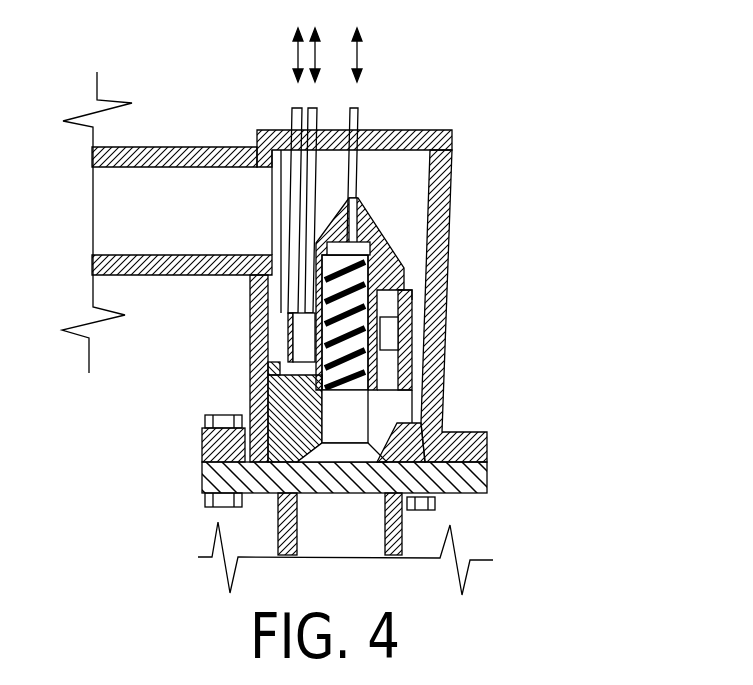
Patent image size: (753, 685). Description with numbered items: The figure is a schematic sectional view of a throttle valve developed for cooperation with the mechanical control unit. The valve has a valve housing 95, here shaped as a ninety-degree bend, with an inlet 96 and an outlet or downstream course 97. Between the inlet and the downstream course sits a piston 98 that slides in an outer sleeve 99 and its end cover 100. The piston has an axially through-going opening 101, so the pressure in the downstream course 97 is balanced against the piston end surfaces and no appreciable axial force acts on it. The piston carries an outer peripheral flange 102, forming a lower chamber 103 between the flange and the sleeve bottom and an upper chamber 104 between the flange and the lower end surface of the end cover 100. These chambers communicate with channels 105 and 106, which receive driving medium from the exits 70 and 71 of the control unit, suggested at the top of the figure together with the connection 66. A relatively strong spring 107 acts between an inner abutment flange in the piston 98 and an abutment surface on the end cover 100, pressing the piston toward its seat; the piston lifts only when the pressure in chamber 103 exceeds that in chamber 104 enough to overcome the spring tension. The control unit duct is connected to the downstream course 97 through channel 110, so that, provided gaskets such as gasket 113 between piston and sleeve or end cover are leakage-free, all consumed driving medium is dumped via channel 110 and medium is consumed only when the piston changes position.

The exit of the control unit 66 is at (364, 41).
The exit of the control unit 70 is at (284, 41).
The exit of the control unit 71 is at (326, 41).
The valve housing 95 is at (418, 402).
The inlet 96 is at (192, 250).
The downstream course 97 is at (330, 523).
The piston 98 is at (412, 357).
The outer sleeve 99 is at (405, 320).
The end cover 100 is at (372, 226).
The axially through-going opening 101 is at (352, 413).
The outer peripheral flange 102 is at (266, 370).
The lower chamber 103 is at (250, 383).
The upper chamber 104 is at (300, 335).
The channel 105 is at (294, 122).
The channel 106 is at (306, 124).
The spring 107 is at (400, 270).
The channel 110 is at (360, 122).
The gasket 113 is at (410, 296).